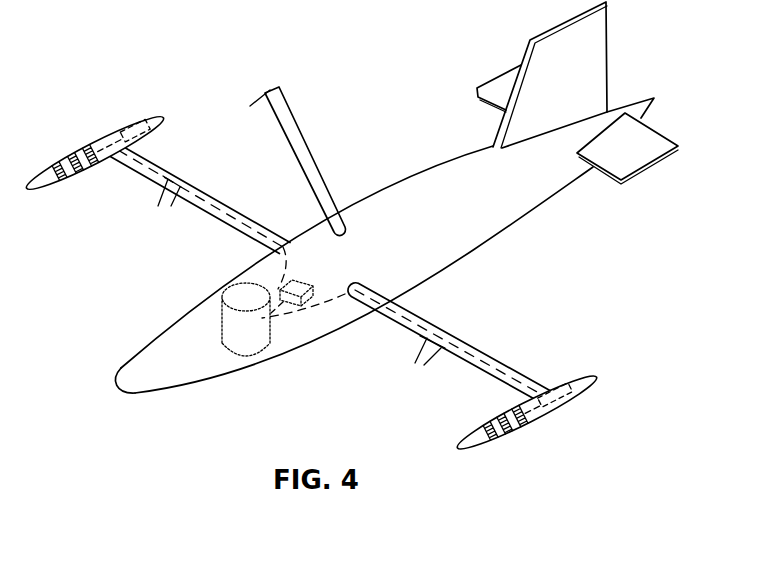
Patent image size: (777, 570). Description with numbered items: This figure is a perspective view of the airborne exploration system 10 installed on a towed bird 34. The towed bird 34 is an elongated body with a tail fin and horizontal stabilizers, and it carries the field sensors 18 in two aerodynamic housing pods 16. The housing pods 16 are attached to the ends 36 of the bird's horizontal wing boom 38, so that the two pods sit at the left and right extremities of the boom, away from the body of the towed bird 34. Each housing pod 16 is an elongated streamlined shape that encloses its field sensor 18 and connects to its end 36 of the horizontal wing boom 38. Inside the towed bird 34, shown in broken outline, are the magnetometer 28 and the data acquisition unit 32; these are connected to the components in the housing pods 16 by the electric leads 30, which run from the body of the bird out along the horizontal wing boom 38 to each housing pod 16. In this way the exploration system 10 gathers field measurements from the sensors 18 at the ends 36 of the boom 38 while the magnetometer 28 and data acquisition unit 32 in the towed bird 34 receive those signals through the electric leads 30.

The airborne exploration system 10 is at (397, 197).
The housing pods 16 is at (48, 182).
The field sensors 18 is at (144, 99).
The magnetometer 28 is at (253, 343).
The electric leads 30 is at (298, 287).
The data acquisition unit 32 is at (300, 286).
The towed bird 34 is at (422, 193).
The ends of the horizontal wing boom 36 is at (143, 155).
The horizontal wing boom 38 is at (213, 198).